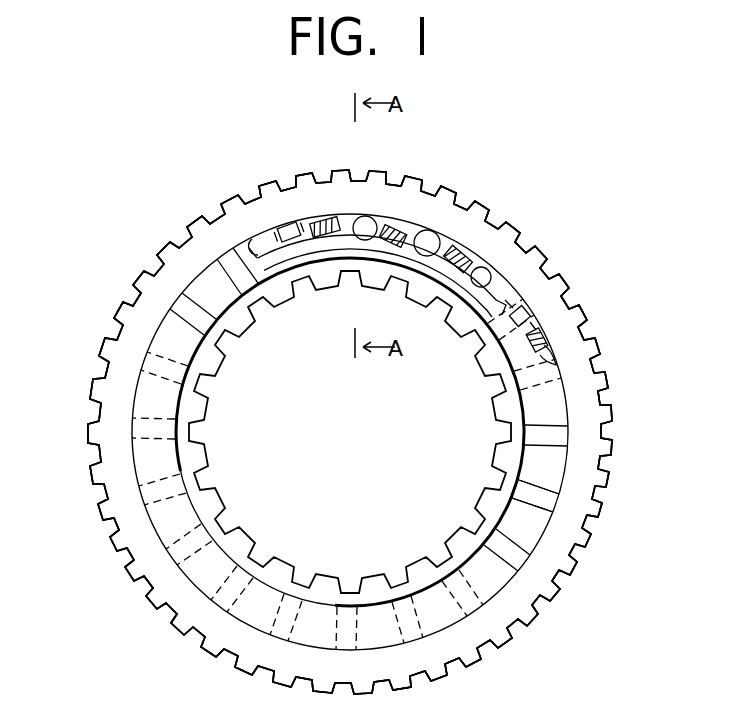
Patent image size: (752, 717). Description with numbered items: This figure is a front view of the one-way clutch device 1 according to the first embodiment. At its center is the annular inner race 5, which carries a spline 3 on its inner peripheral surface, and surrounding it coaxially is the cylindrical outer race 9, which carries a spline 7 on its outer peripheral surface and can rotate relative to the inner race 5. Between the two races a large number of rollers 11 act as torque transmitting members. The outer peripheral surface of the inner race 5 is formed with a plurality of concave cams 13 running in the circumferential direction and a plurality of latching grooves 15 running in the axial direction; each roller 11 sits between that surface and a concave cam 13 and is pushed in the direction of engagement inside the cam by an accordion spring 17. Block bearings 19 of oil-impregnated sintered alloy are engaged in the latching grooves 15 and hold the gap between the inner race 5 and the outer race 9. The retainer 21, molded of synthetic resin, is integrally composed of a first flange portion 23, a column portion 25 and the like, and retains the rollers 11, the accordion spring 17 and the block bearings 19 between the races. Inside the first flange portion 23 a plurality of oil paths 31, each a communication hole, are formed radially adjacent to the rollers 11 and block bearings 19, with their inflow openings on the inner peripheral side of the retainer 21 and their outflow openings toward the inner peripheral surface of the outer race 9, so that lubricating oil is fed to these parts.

The one-way clutch device 1 is at (120, 194).
The spline 3 is at (485, 504).
The inner race 5 is at (492, 315).
The spline 7 is at (608, 397).
The outer race 9 is at (559, 314).
The rollers 11 is at (492, 270).
The concave cams 13 is at (478, 288).
The latching grooves 15 is at (300, 263).
The accordion spring 17 is at (478, 257).
The block bearings 19 is at (288, 226).
The retainer 21 is at (196, 268).
The first flange portion 23 is at (165, 340).
The column portion 25 is at (396, 198).
The oil paths 31 is at (521, 490).